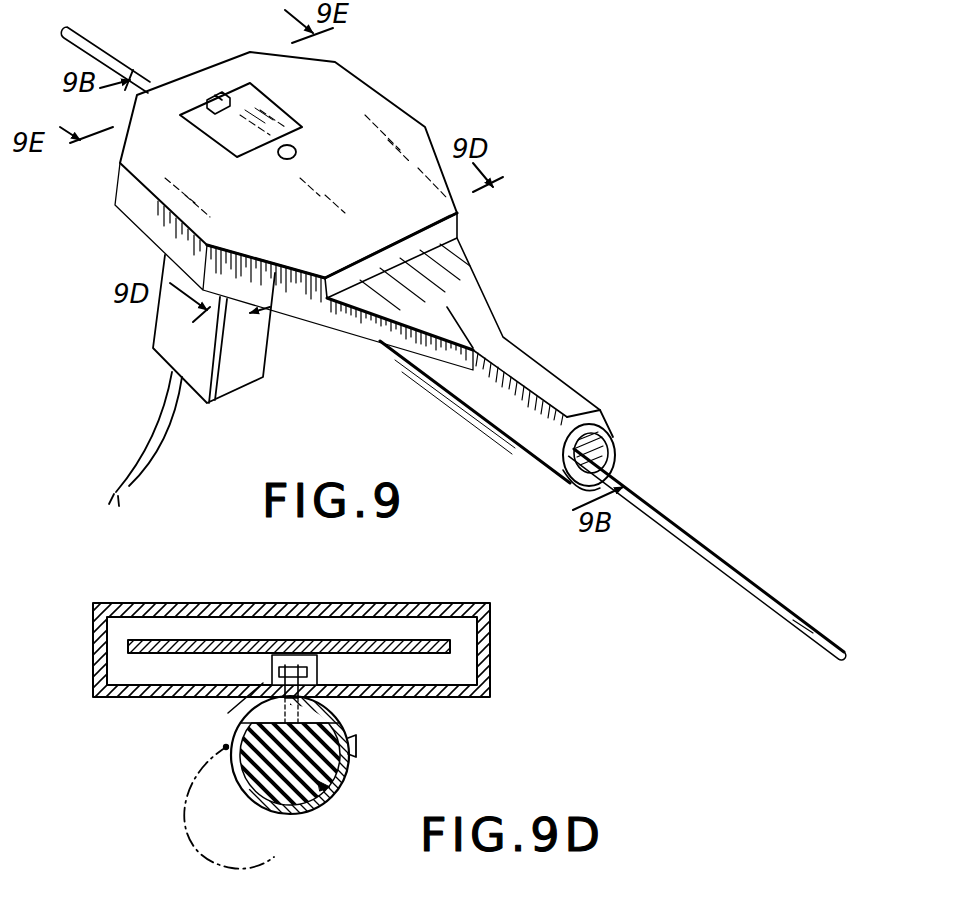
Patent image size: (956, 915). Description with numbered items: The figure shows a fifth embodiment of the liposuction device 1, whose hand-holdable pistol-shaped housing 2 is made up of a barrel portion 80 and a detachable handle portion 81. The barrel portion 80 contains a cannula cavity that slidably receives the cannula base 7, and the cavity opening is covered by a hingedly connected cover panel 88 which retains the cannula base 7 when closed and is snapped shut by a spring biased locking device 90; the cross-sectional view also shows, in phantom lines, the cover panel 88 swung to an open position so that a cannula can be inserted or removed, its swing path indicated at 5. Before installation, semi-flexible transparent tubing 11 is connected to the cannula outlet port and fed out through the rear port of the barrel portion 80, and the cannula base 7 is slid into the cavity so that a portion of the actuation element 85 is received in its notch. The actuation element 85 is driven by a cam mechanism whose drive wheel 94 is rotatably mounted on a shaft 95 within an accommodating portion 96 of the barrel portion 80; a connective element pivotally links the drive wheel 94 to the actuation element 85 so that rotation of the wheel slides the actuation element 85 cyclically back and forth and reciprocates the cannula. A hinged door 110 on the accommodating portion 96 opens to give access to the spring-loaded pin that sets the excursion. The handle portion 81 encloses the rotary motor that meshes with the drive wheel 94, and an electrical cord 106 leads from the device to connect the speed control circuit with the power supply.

In FIG. 9, the liposuction device 1 is at (530, 93).
In FIG. 9, the pistol-shaped housing 2 is at (143, 377).
In FIG. 9D, the pivot path 5 is at (228, 747).
In FIG. 9D, the cannula base 7 is at (325, 785).
In FIG. 9, the semi-flexible transparent tubing 11 is at (90, 32).
In FIG. 9, the barrel portion 80 is at (467, 303).
In FIG. 9D, the barrel portion 80 is at (200, 723).
In FIG. 9, the detachable handle portion 81 is at (158, 332).
In FIG. 9D, the actuation element 85 is at (310, 690).
In FIG. 9, the cover panel 88 is at (572, 480).
In FIG. 9D, the cover panel 88 is at (313, 803).
In FIG. 9D, the spring biased locking device 90 is at (353, 750).
In FIG. 9D, the drive wheel 94 is at (450, 646).
In FIG. 9, the shaft 95 is at (296, 153).
In FIG. 9, the accommodating portion 96 is at (382, 227).
In FIG. 9, the electrical cord 106 is at (128, 461).
In FIG. 9, the hinged door 110 is at (118, 163).